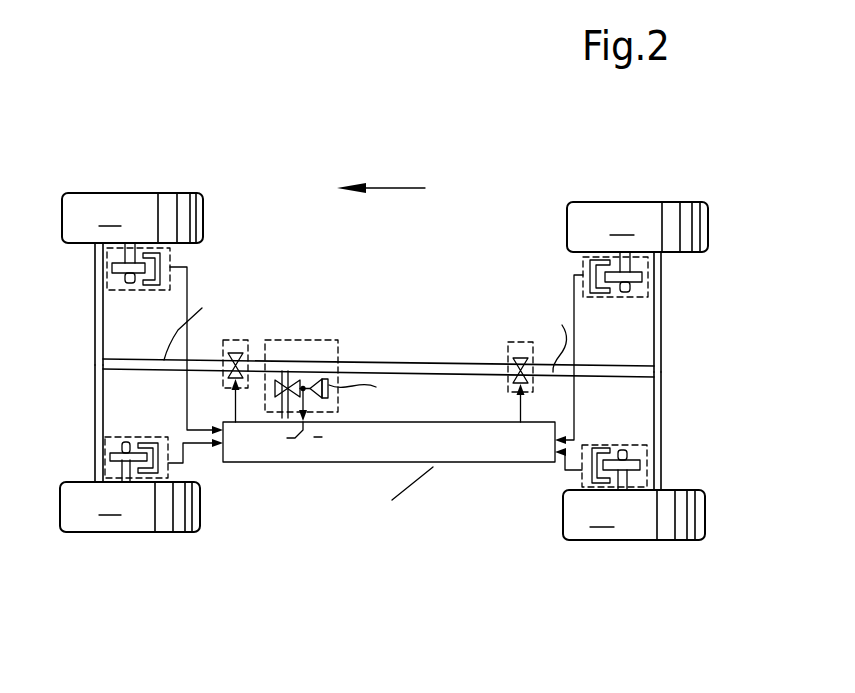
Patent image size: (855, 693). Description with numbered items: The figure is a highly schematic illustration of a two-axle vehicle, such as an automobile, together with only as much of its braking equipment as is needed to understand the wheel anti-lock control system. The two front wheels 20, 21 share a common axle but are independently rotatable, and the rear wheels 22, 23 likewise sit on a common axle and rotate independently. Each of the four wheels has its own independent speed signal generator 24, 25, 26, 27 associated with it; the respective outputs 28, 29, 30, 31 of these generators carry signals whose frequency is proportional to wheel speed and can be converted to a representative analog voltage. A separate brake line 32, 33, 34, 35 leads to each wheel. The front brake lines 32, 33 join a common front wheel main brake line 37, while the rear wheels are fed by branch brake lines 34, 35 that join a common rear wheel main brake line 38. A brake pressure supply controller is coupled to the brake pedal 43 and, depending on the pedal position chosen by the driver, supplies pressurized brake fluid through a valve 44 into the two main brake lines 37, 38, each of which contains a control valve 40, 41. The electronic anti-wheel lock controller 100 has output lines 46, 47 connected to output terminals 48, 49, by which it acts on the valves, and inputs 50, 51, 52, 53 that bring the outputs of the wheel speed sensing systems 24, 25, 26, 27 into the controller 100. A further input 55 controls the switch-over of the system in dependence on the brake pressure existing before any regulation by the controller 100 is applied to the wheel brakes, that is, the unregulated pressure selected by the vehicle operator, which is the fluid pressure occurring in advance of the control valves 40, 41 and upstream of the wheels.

The front wheel 20 is at (64, 201).
The front wheel 21 is at (97, 523).
The rear wheel 22 is at (587, 205).
The rear wheel 23 is at (594, 537).
The speed signal generator 24 is at (139, 290).
The speed signal generator 25 is at (128, 437).
The speed signal generator 26 is at (590, 297).
The speed signal generator 27 is at (608, 445).
The speed signal generator output 28 is at (176, 266).
The speed signal generator output 29 is at (172, 470).
The speed signal generator output 30 is at (574, 273).
The speed signal generator output 31 is at (577, 473).
The brake line 32 is at (95, 296).
The brake line 33 is at (93, 430).
The branch brake line 34 is at (663, 322).
The branch brake line 35 is at (662, 416).
The front wheel main brake line 37 is at (129, 359).
The rear wheel main brake line 38 is at (607, 366).
The valve 40 is at (229, 378).
The valve 41 is at (511, 384).
The brake pedal 43 is at (329, 390).
The valve 44 is at (276, 389).
The output line 46 is at (233, 398).
The output line 47 is at (521, 396).
The output terminal 48 is at (226, 423).
The output terminal 49 is at (518, 427).
The input 50 is at (230, 448).
The input 51 is at (196, 445).
The input 52 is at (557, 440).
The input 53 is at (560, 452).
The further input 55 is at (313, 427).
The electronic anti-wheel lock controller 100 is at (433, 463).